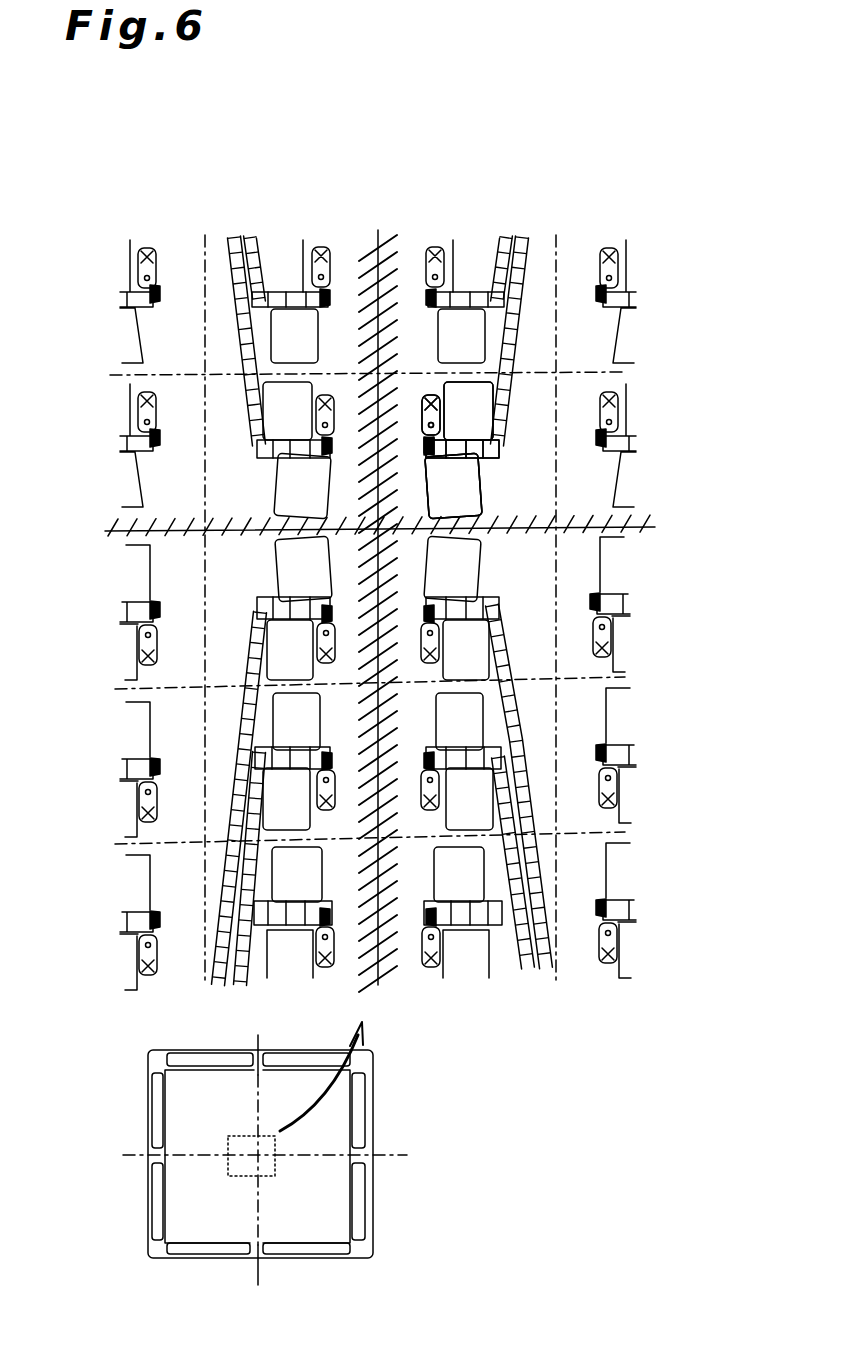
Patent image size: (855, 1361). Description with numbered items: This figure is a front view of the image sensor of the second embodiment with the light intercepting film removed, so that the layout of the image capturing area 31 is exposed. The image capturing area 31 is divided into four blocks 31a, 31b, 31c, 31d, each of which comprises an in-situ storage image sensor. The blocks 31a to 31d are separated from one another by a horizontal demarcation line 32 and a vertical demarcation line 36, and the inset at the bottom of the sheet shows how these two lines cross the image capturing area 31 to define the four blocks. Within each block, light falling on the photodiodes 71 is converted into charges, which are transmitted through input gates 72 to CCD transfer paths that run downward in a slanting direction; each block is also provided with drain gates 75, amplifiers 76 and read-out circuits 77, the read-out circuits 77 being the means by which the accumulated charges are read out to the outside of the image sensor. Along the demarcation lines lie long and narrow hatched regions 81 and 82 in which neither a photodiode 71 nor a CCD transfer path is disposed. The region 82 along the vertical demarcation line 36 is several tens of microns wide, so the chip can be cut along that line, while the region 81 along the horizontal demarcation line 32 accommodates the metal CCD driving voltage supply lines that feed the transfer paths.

The image capturing area 31 is at (172, 1082).
The block 31a is at (172, 1117).
The block 31b is at (332, 1115).
The block 31c is at (172, 1205).
The block 31d is at (325, 1202).
The horizontal demarcation line 32 is at (258, 1277).
The vertical demarcation line 36 is at (395, 1155).
The photodiode 71 is at (478, 403).
The input gate 72 is at (437, 463).
The drain gate 75 is at (482, 452).
The amplifier 76 is at (428, 438).
The read-out circuit 77 is at (430, 432).
The region 81 is at (105, 520).
The region 82 is at (403, 963).